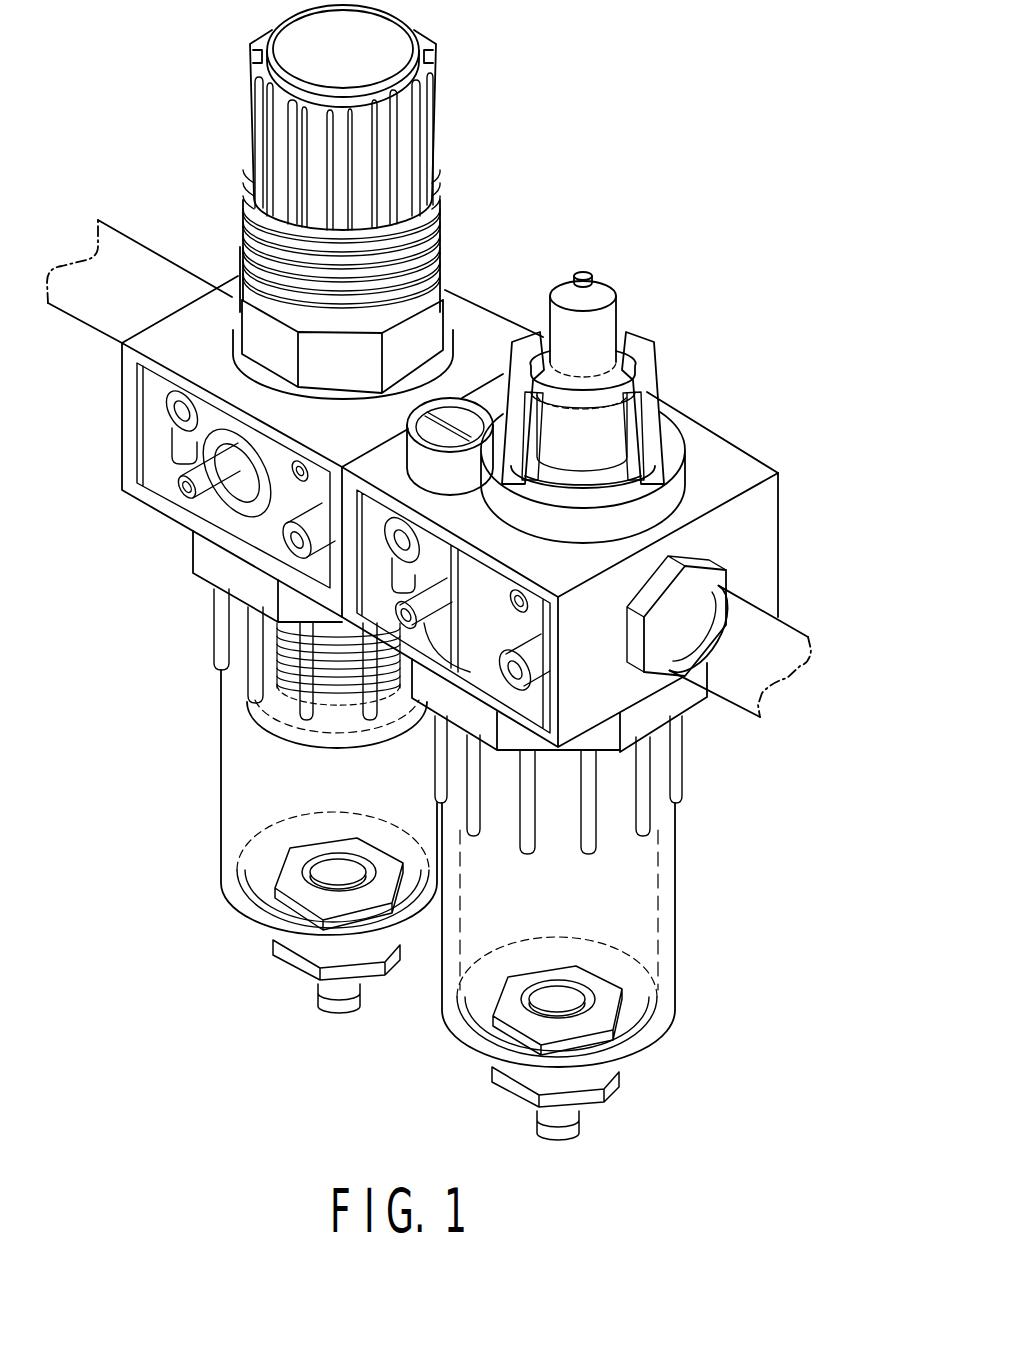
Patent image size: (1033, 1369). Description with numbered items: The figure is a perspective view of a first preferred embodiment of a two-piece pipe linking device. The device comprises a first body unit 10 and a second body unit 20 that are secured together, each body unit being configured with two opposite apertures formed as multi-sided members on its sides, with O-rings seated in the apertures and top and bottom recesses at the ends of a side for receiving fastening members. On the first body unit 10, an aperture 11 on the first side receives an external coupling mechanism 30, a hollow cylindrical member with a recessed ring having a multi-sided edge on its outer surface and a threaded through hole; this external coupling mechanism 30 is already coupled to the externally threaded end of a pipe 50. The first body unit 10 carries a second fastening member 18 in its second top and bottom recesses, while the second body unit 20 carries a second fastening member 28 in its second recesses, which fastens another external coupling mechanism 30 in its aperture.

The first body unit 10 is at (505, 706).
The second body unit 20 is at (296, 509).
The aperture 11 is at (596, 569).
The external coupling mechanism 30 is at (683, 523).
The pipe 50 is at (708, 562).
The second fastening member 28 is at (177, 443).
The second fastening member 18 is at (398, 568).